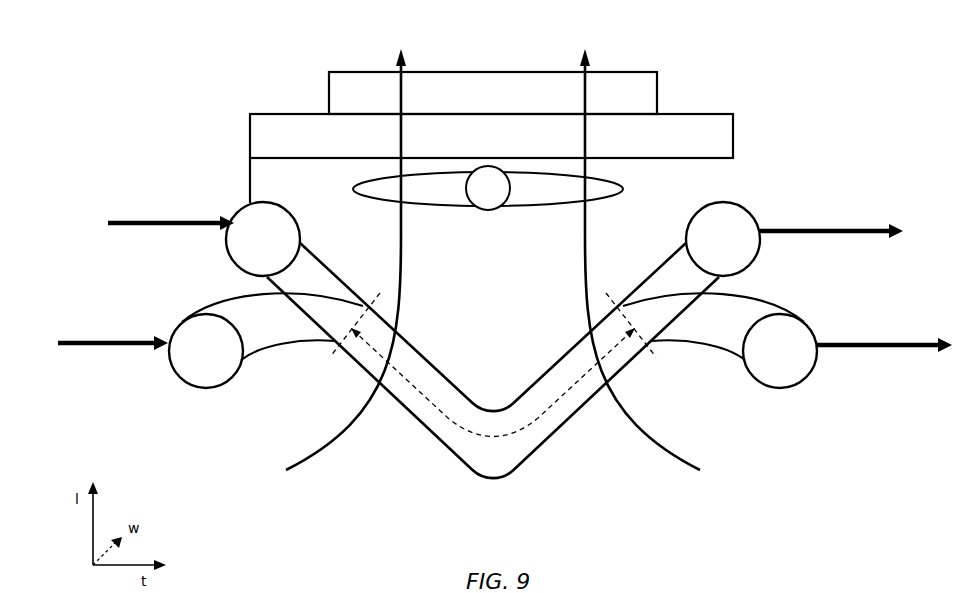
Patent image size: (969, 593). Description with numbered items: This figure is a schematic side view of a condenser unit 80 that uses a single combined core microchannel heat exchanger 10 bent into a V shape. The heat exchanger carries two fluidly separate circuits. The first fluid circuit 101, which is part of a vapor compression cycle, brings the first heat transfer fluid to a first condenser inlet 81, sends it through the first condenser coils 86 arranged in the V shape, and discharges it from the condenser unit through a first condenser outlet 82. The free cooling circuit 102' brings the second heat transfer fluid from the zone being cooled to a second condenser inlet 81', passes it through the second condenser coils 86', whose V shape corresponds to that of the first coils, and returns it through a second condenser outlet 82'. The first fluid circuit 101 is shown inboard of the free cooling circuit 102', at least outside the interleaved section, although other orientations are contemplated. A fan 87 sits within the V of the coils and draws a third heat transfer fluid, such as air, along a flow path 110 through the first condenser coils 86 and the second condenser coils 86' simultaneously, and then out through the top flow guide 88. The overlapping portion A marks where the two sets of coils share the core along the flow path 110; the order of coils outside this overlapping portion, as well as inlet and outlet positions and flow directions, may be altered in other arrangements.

The condenser unit 80 is at (801, 50).
The combined core microchannel heat exchanger 10 is at (216, 177).
The top flow guide 88 is at (657, 83).
The fan 87 is at (490, 211).
The first condenser inlet 81 is at (236, 231).
The first condenser outlet 82 is at (764, 234).
The first condenser coil 86 is at (493, 348).
The overlapping portion A is at (490, 437).
The second condenser inlet 81' is at (192, 369).
The second condenser outlet 82' is at (799, 370).
The second condenser coil 86' is at (493, 353).
The first fluid circuit 101 is at (148, 220).
The free cooling circuit 102' is at (102, 323).
The flow path 110 is at (310, 458).